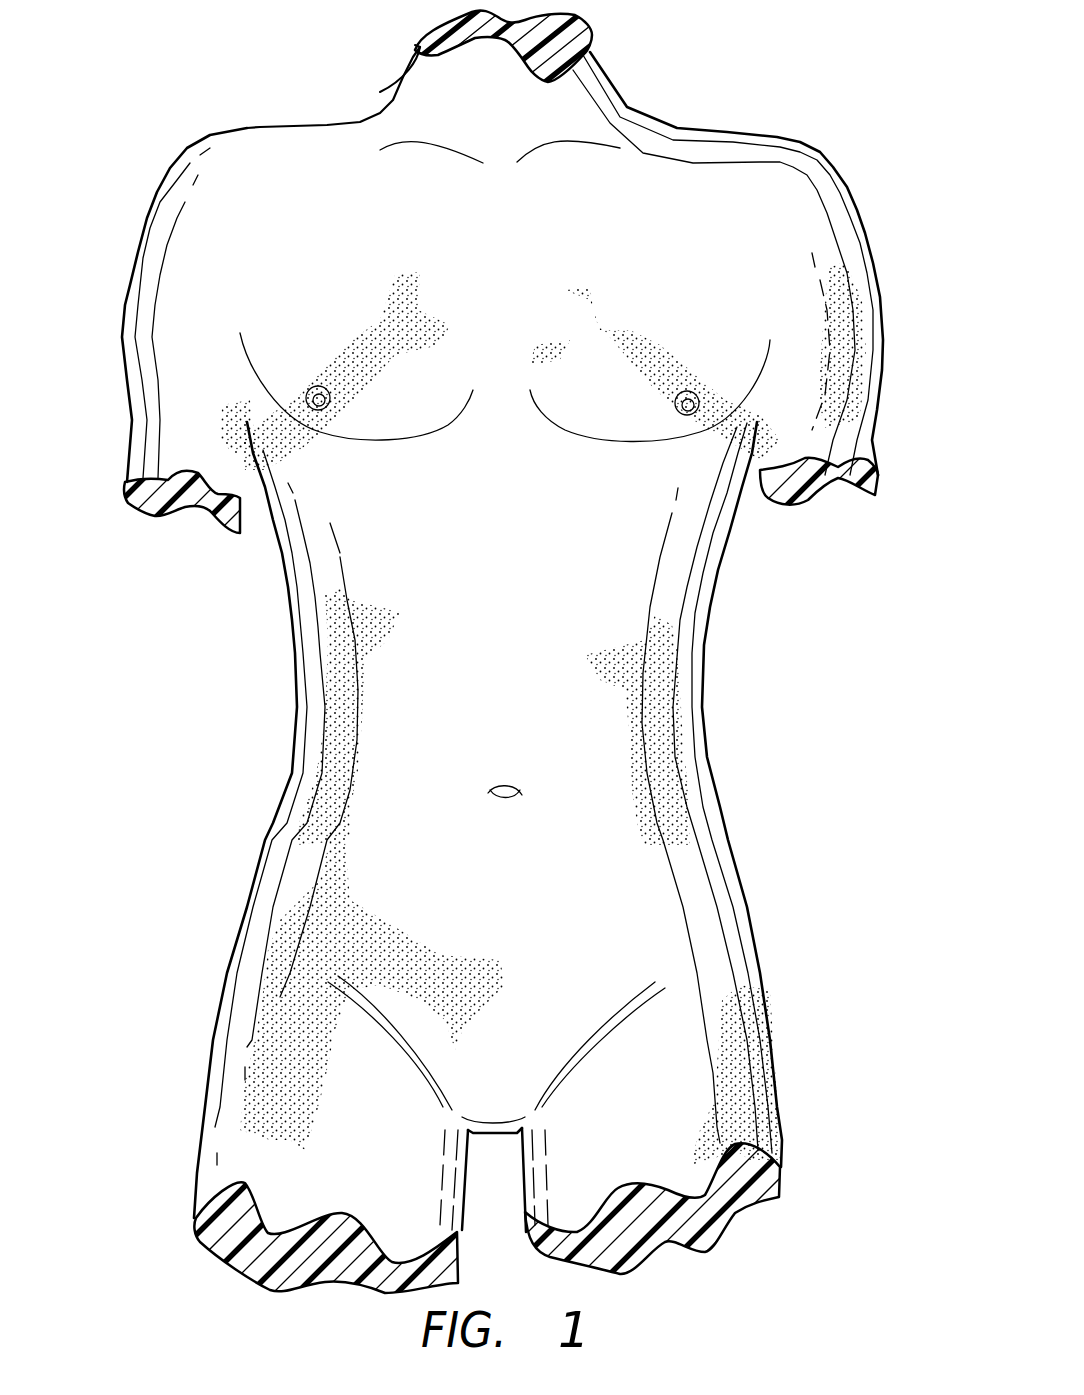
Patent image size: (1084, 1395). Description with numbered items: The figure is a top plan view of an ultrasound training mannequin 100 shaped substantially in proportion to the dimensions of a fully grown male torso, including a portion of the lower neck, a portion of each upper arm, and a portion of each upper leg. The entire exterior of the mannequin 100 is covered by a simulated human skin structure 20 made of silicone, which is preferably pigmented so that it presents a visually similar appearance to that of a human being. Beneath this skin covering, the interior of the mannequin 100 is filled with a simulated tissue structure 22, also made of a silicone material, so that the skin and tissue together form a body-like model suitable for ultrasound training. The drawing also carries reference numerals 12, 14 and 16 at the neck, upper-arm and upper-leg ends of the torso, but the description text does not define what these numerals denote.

The mannequin 100 is at (196, 108).
The neckline 12 is at (427, 87).
The simulated tissue structure 22 is at (588, 22).
The simulated human skin structure 20 is at (823, 157).
The sleeve hem 14 is at (130, 432).
The leg hem 16 is at (200, 1107).